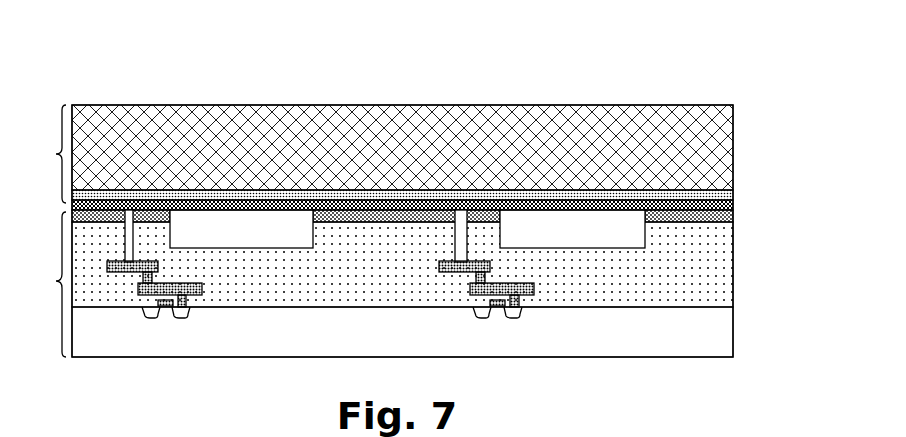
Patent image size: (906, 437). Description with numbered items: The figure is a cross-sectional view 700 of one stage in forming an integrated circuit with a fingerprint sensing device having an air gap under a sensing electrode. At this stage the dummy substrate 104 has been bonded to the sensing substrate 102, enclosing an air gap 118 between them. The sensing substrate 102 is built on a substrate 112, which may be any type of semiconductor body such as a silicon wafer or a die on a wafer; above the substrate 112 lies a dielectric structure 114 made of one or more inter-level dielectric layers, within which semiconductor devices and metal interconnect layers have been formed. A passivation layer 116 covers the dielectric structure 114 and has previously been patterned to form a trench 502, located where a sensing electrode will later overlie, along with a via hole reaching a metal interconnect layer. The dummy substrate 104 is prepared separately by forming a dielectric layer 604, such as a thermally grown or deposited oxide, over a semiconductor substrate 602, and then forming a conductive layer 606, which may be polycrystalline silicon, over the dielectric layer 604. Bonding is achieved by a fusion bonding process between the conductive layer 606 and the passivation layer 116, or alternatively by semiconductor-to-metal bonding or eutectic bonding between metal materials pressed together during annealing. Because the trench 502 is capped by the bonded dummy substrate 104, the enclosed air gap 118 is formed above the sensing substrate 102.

The cross-sectional view 700 is at (125, 40).
The dummy substrate 104 is at (44, 166).
The sensing substrate 102 is at (44, 290).
The trench 502 is at (128, 212).
The semiconductor substrate 602 is at (733, 125).
The dielectric layer 604 is at (733, 193).
The conductive layer 606 is at (733, 203).
The passivation layer 116 is at (733, 216).
The air gap 118 is at (228, 233).
The dielectric structure 114 is at (733, 256).
The substrate 112 is at (733, 338).